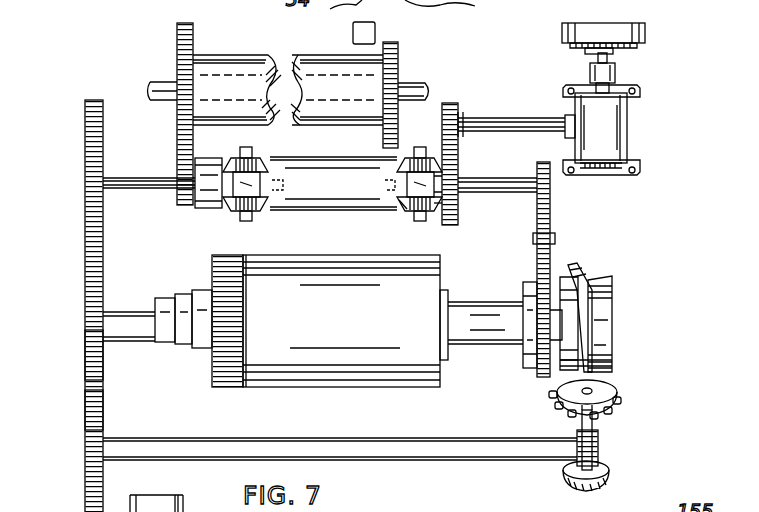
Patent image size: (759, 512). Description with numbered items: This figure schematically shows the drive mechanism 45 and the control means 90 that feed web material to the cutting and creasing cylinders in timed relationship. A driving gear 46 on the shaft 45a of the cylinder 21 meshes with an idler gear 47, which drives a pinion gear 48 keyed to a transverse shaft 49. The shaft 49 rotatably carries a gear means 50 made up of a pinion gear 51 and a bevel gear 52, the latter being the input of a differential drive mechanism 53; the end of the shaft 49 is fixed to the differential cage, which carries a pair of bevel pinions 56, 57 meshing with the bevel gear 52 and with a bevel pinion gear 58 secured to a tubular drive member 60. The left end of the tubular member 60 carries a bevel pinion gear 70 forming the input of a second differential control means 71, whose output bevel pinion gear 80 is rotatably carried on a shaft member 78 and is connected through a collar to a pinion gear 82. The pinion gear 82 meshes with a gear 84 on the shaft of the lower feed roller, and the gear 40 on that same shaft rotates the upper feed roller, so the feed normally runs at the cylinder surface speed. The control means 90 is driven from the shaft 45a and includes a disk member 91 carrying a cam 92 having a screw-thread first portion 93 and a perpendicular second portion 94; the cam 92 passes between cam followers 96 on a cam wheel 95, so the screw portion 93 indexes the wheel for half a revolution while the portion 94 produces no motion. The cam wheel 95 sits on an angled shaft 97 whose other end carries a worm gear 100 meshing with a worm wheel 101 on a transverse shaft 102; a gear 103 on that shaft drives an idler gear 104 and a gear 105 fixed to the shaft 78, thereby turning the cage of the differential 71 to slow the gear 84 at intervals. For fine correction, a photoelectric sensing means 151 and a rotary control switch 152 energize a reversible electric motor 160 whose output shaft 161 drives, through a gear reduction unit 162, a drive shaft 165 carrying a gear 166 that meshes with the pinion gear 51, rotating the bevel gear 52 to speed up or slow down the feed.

The cylinder 21 is at (440, 268).
The gear 40 is at (399, 48).
The drive mechanism 45 is at (593, 239).
The shaft 45a is at (492, 325).
The driving gear 46 is at (572, 272).
The idler gear 47 is at (553, 222).
The pinion gear 48 is at (553, 195).
The shaft 49 is at (523, 190).
The gear means 50 is at (460, 166).
The pinion gear 51 is at (446, 207).
The bevel gear 52 is at (445, 192).
The differential drive mechanism 53 is at (402, 212).
The bevel pinion 56 is at (412, 150).
The bevel pinion 57 is at (428, 221).
The bevel pinion gear 58 is at (397, 200).
The tubular drive member 60 is at (331, 210).
The bevel pinion gear 70 is at (276, 175).
The second differential control means 71 is at (233, 223).
The shaft member 78 is at (152, 190).
The bevel pinion gear 80 is at (236, 160).
The pinion gear 82 is at (178, 208).
The gear 84 is at (194, 33).
The control means 90 is at (663, 407).
The disk member 91 is at (610, 342).
The cam 92 is at (612, 300).
The first portion 93 is at (600, 278).
The second portion 94 is at (612, 360).
The cam wheel 95 is at (618, 388).
The cam followers 96 is at (603, 412).
The shaft 97 is at (598, 462).
The worm gear 100 is at (610, 482).
The worm wheel 101 is at (598, 450).
The shaft member 102 is at (479, 441).
The gear 103 is at (103, 410).
The idler gear 104 is at (85, 357).
The gear 105 is at (85, 232).
The sensing means 151 is at (378, 30).
The rotary control switch 152 is at (530, 370).
The reversible electric motor 160 is at (646, 32).
The output shaft 161 is at (612, 60).
The gear reduction unit 162 is at (630, 128).
The drive shaft 165 is at (496, 122).
The gear 166 is at (452, 110).